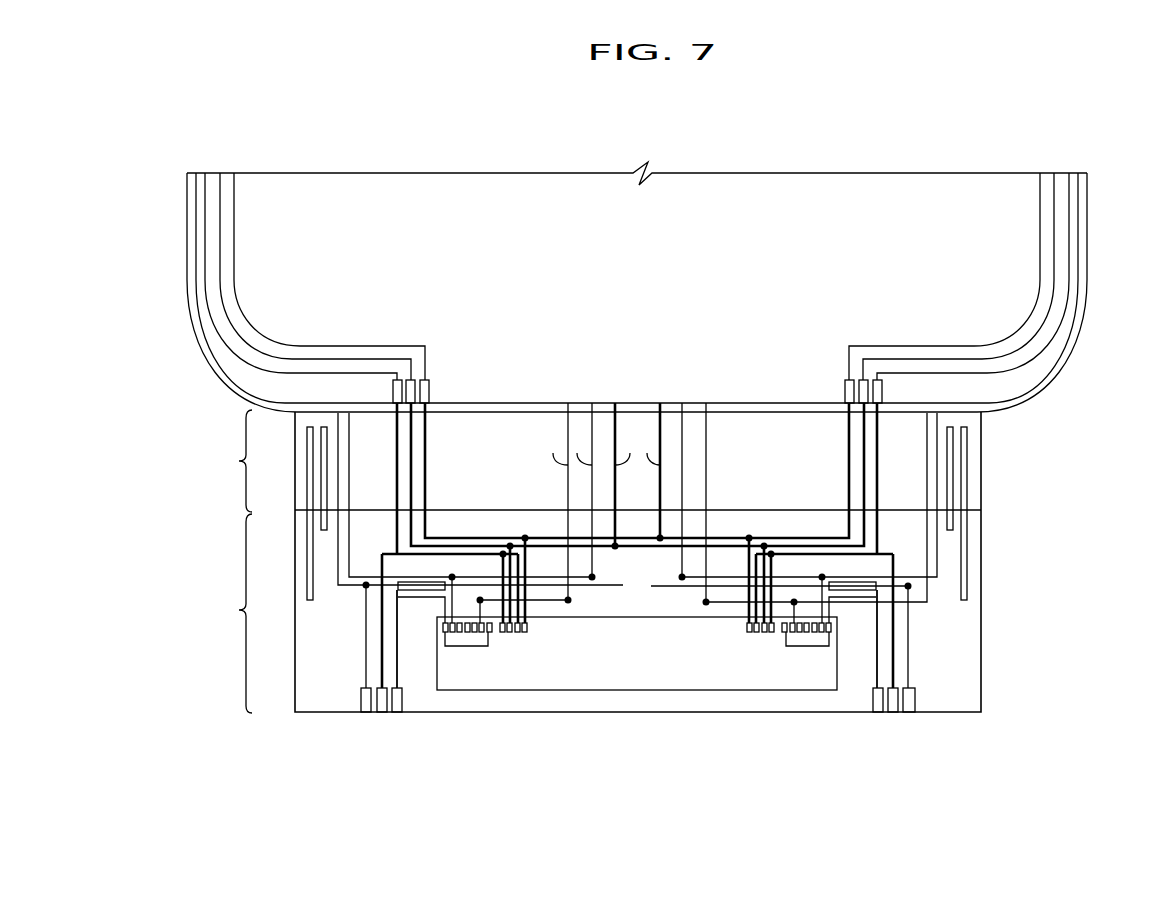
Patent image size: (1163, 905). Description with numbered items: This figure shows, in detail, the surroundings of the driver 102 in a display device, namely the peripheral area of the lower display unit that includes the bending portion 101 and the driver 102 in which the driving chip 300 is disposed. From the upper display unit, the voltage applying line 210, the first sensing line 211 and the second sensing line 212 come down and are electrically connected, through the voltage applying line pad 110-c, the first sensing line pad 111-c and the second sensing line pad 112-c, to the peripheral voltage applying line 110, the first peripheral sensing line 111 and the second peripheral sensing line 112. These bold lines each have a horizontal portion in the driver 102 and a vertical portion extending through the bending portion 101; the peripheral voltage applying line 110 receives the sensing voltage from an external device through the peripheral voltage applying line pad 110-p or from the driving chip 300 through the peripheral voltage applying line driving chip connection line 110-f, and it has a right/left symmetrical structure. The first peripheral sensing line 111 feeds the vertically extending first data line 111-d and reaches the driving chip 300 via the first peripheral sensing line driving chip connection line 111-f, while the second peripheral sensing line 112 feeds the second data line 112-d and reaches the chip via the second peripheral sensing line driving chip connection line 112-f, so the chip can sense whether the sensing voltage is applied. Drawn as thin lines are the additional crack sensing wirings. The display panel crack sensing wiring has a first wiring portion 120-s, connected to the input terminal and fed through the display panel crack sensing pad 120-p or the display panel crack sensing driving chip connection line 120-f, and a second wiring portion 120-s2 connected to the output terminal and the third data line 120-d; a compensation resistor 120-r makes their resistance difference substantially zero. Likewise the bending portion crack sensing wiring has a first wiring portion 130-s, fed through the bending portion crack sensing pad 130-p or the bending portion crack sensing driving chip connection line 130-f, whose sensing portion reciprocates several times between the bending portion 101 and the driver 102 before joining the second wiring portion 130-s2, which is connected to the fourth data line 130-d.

The bending portion 101 is at (228, 461).
The driver 102 is at (228, 613).
The peripheral voltage applying line 110 is at (375, 617).
The first peripheral sensing line 111 is at (865, 467).
The second peripheral sensing line 112 is at (851, 493).
The voltage applying line 210 is at (1070, 183).
The first sensing line 211 is at (1056, 212).
The second sensing line 212 is at (1042, 247).
The driving chip 300 is at (742, 690).
The voltage applying line pad 110-c is at (883, 397).
The first sensing line pad 111-c is at (883, 383).
The second sensing line pad 112-c is at (862, 380).
The first wiring portion of bending portion crack sensing wiring 130-s is at (968, 488).
The first wiring portion of display panel crack sensing wiring 120-s is at (940, 542).
The second wiring portion of display panel crack sensing wiring 120-s2 is at (937, 582).
The second wiring portion of bending portion crack sensing wiring 130-s2 is at (930, 605).
The fourth data line 130-d is at (553, 453).
The third data line 120-d is at (577, 453).
The first data line 111-d is at (630, 453).
The second data line 112-d is at (647, 453).
The bending portion crack sensing driving chip connection line 130-f is at (475, 632).
The display panel crack sensing driving chip connection line 120-f is at (440, 600).
The peripheral voltage applying line driving chip connection line 110-f is at (483, 632).
The first peripheral sensing line driving chip connection line 111-f is at (497, 632).
The second peripheral sensing line driving chip connection line 112-f is at (528, 565).
The compensation resistor 120-r is at (860, 592).
The display panel crack sensing pad 120-p is at (361, 693).
The peripheral voltage applying line pad 110-p is at (382, 712).
The bending portion crack sensing pad 130-p is at (402, 693).